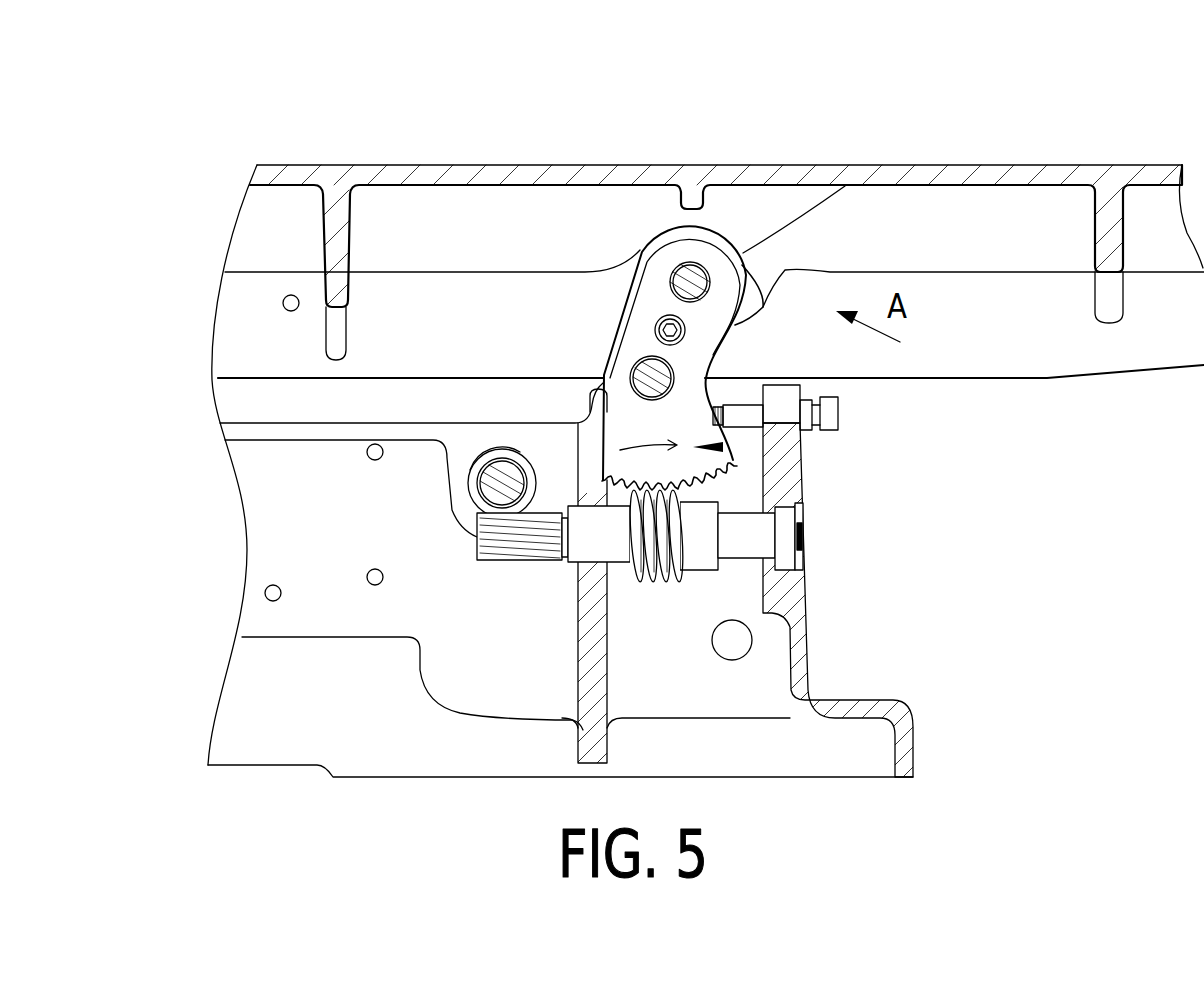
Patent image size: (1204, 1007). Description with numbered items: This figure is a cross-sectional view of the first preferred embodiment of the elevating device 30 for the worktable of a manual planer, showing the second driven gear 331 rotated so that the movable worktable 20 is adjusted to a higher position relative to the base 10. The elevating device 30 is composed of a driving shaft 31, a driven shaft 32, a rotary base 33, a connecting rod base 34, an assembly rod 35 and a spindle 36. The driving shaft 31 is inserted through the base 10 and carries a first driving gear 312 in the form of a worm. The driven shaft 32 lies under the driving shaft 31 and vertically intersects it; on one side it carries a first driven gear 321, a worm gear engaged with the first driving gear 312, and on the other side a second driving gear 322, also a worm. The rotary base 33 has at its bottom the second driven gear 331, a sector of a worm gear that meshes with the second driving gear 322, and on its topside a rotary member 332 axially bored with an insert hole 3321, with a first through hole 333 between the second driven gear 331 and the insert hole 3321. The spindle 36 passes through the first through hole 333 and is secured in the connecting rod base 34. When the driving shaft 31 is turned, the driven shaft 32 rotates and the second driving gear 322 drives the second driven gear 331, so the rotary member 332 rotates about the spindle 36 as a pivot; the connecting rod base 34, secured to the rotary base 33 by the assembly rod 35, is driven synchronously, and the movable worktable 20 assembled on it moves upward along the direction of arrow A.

The base 10 is at (925, 725).
The movable worktable 20 is at (1058, 162).
The elevating device 30 is at (723, 447).
The driving shaft 31 is at (495, 470).
The first driving gear 312 is at (490, 480).
The driven shaft 32 is at (578, 553).
The first driven gear 321 is at (495, 549).
The second driving gear 322 is at (667, 580).
The rotary base 33 is at (700, 395).
The second driven gear 331 is at (707, 474).
The rotary member 332 is at (688, 262).
The insert hole 3321 is at (690, 260).
The first through hole 333 is at (646, 368).
The connecting rod base 34 is at (777, 272).
The assembly rod 35 is at (700, 282).
The spindle 36 is at (640, 372).